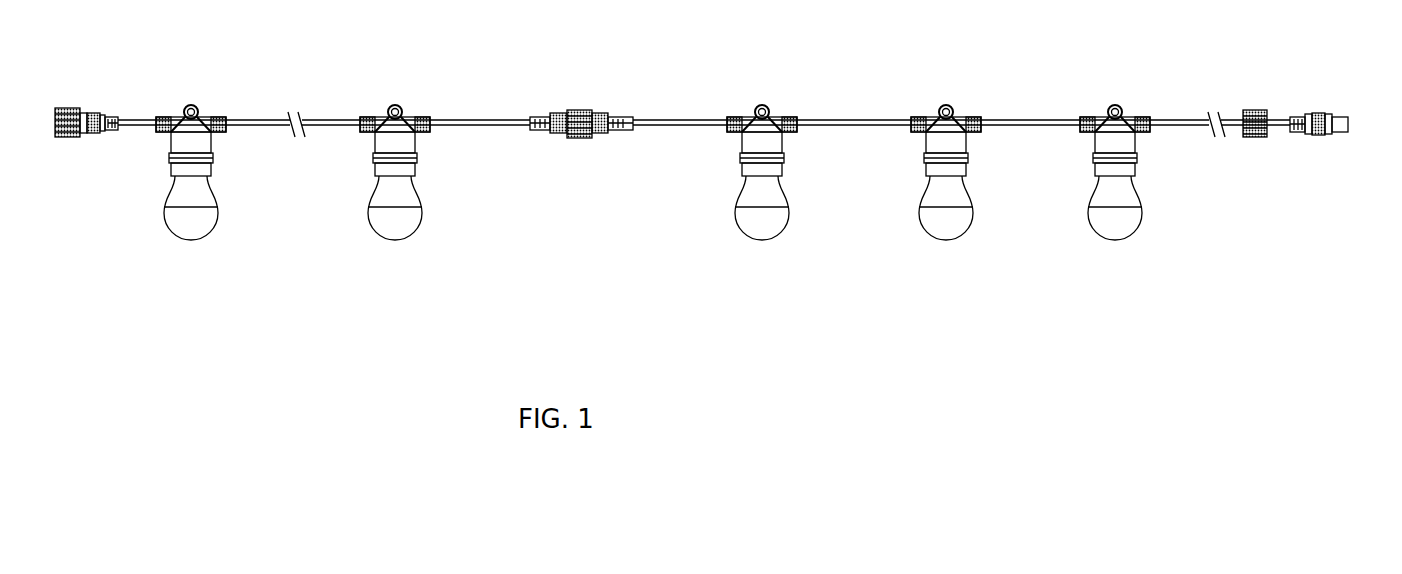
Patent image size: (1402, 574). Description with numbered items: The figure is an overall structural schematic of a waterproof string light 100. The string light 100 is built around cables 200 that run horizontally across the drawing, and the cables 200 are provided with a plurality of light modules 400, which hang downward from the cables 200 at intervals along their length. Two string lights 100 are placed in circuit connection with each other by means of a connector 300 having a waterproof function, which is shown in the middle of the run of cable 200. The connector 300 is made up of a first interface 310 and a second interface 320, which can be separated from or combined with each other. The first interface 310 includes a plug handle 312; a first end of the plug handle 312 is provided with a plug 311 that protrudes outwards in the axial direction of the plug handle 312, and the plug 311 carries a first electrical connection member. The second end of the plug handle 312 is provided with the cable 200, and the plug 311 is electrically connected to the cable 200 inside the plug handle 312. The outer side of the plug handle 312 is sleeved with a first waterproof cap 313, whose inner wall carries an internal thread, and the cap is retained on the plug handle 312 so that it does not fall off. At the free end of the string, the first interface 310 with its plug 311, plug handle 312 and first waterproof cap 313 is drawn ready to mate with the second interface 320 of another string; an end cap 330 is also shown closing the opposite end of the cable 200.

The string light 100 is at (455, 325).
The cable 200 is at (503, 118).
The connector 300 is at (597, 93).
The first interface 310 is at (562, 133).
The plug 311 is at (1340, 115).
The plug handle 312 is at (1315, 113).
The first waterproof cap 313 is at (1258, 137).
The second interface 320 is at (88, 137).
The end cap 330 is at (62, 108).
The light module 400 is at (356, 203).